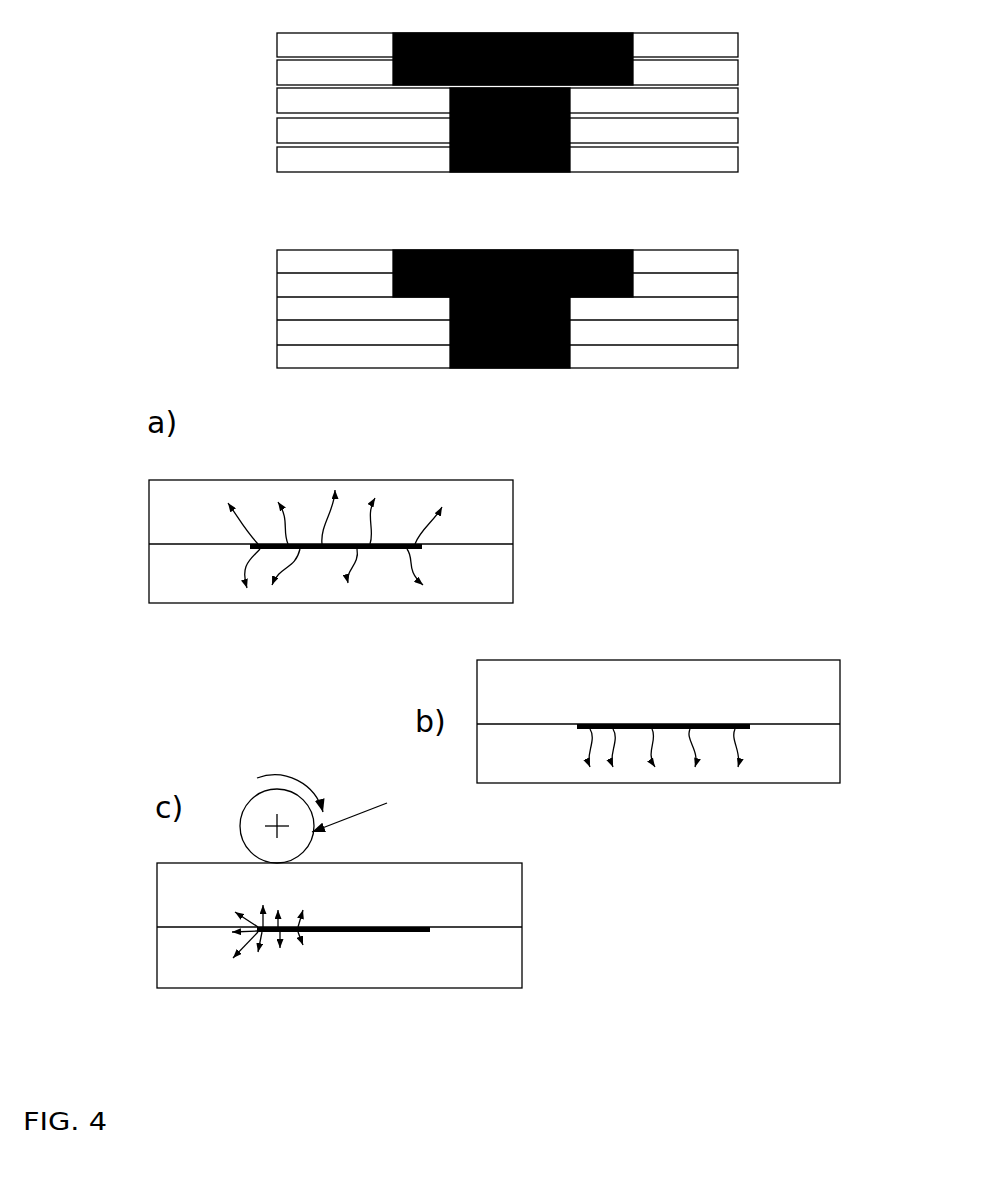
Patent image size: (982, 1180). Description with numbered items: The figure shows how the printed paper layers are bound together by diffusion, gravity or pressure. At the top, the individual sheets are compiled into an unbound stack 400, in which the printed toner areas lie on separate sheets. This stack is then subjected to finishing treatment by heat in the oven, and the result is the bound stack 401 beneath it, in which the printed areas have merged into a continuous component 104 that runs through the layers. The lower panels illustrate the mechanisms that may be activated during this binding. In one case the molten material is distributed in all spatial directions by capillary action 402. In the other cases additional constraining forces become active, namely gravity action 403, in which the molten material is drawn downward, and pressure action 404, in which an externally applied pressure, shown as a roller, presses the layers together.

The unbound stack 400 is at (397, 135).
The bound stack 401 is at (277, 308).
The component 104 is at (570, 358).
The capillary action 402 is at (430, 530).
The gravity action 403 is at (698, 758).
The pressure action 404 is at (313, 933).